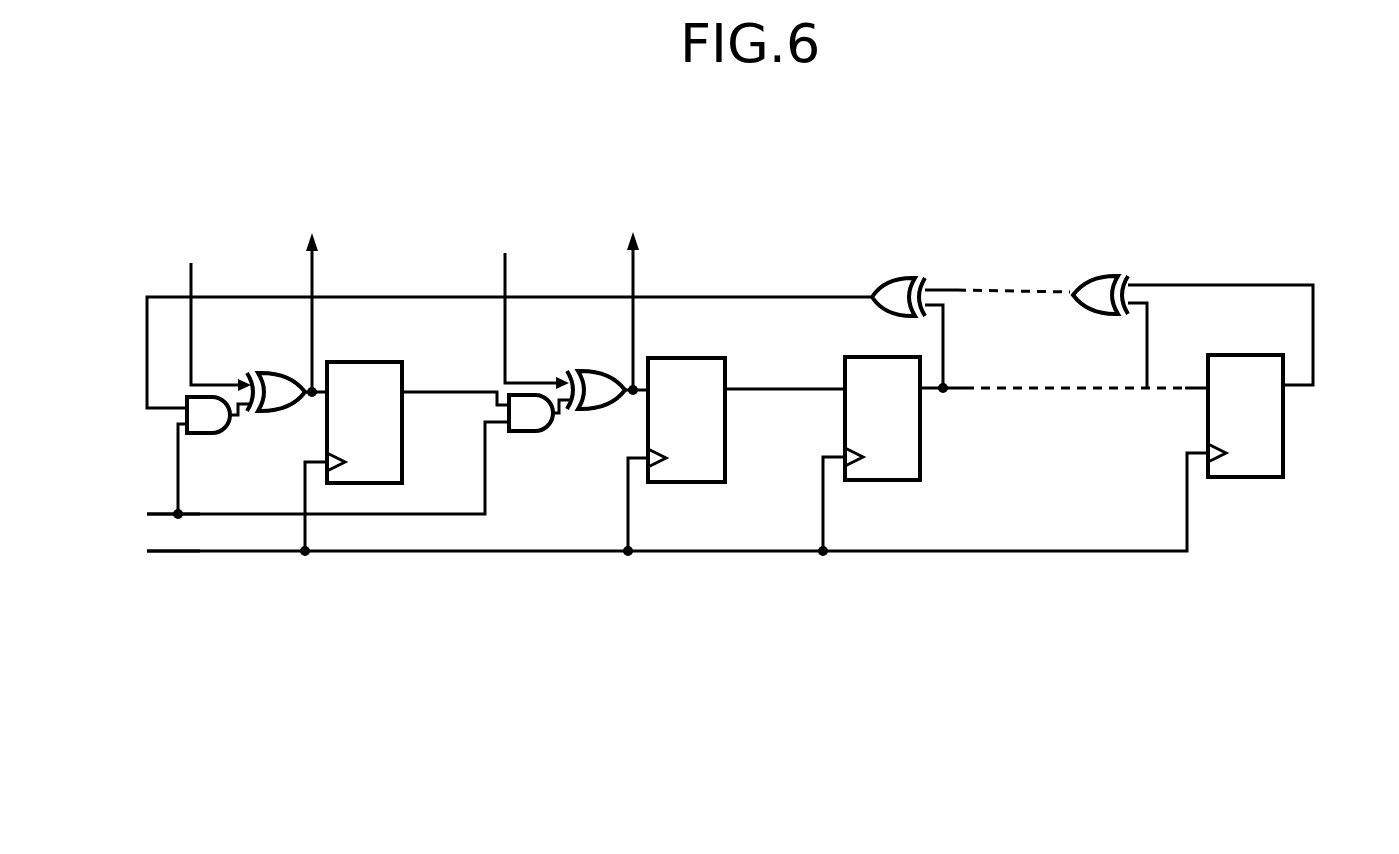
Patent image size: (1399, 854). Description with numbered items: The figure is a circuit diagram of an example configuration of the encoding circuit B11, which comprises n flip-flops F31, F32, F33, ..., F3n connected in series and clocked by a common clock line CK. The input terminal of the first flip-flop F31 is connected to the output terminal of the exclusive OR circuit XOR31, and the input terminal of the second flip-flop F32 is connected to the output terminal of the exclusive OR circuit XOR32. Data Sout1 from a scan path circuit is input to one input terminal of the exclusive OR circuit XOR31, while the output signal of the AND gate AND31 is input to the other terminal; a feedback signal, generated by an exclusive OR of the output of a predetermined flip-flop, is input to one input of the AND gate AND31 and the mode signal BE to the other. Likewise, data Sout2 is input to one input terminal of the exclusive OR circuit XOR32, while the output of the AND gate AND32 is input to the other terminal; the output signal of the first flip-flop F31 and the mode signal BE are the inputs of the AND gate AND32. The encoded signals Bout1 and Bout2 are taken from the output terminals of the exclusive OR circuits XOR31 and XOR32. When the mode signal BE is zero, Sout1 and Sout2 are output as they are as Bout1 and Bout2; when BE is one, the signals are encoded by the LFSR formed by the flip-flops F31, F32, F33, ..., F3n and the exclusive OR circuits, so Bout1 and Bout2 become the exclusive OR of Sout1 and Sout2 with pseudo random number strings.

The encoding circuit B11 is at (287, 157).
The exclusive OR circuit XOR31 is at (272, 348).
The exclusive OR circuit XOR32 is at (594, 348).
The AND gate AND31 is at (205, 433).
The AND gate AND32 is at (528, 433).
The first flip-flop F31 is at (402, 460).
The second flip-flop F32 is at (725, 440).
The flip-flop F33 is at (920, 445).
The n-th flip-flop F3n is at (1283, 435).
The data from the scan path circuit Sout1 is at (201, 305).
The data from the scan path circuit Sout2 is at (517, 302).
The encoded signal Bout1 is at (317, 293).
The encoded signal Bout2 is at (632, 291).
The mode signal BE is at (145, 514).
The clock signal CK is at (145, 552).